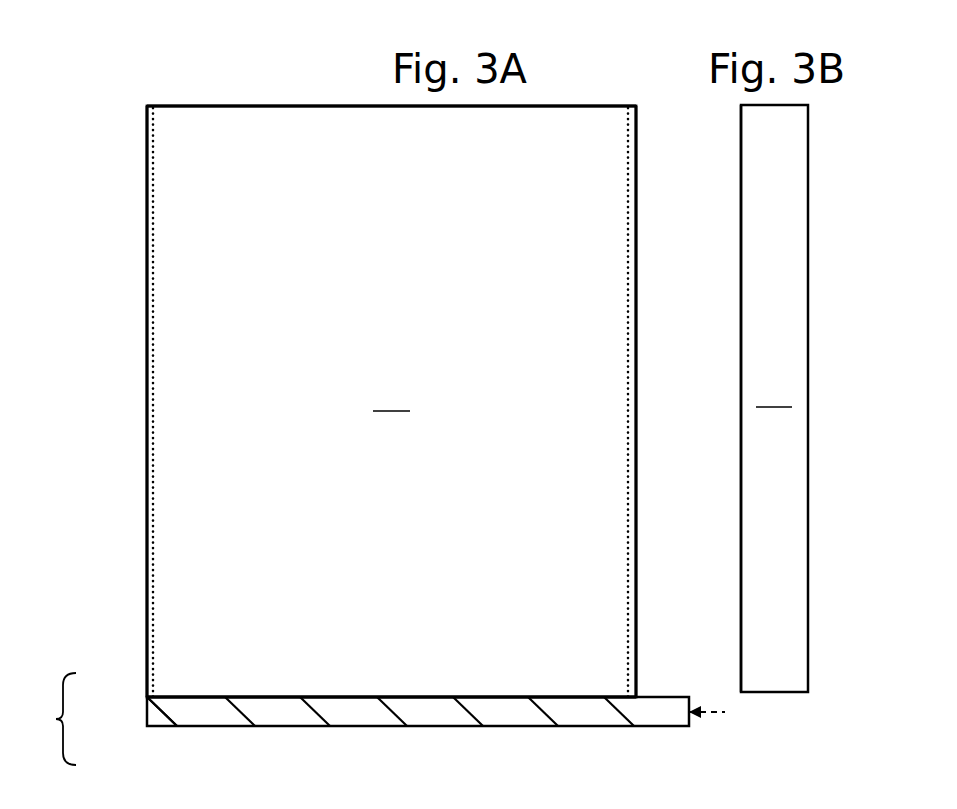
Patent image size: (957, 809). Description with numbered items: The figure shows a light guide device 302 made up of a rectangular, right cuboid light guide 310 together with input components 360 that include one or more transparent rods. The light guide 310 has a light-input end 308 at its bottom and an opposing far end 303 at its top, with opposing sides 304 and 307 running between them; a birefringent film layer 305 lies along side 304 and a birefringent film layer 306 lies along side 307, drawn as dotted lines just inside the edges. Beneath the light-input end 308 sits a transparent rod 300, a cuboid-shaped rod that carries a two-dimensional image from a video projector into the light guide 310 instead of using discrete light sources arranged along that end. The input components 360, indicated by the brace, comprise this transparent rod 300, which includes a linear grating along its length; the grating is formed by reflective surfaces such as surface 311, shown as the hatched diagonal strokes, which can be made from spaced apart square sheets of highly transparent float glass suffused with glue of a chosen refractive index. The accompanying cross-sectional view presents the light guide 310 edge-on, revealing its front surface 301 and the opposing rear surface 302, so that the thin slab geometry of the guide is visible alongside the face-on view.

In FIG. 3A, the transparent rod 300 is at (139, 720).
In FIG. 3B, the front surface 301 is at (740, 266).
In FIG. 3A, the light guide device 302 is at (186, 76).
In FIG. 3B, the light guide device 302 is at (809, 221).
In FIG. 3A, the far end 303 is at (563, 106).
In FIG. 3A, the side 304 is at (146, 222).
In FIG. 3A, the birefringent film layer 305 is at (155, 192).
In FIG. 3A, the birefringent film layer 306 is at (627, 218).
In FIG. 3A, the side 307 is at (637, 195).
In FIG. 3A, the light-input end 308 is at (571, 696).
In FIG. 3A, the light guide 310 is at (391, 400).
In FIG. 3B, the light guide 310 is at (774, 396).
In FIG. 3A, the reflective surface 311 is at (167, 725).
In FIG. 3A, the input components 360 is at (48, 719).